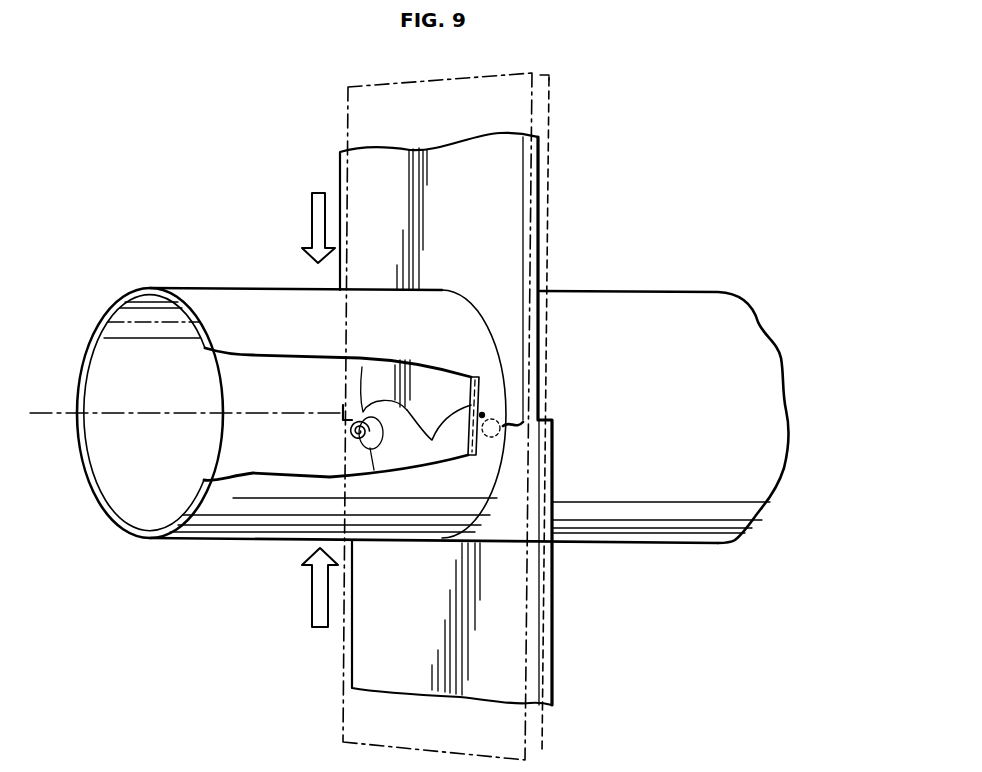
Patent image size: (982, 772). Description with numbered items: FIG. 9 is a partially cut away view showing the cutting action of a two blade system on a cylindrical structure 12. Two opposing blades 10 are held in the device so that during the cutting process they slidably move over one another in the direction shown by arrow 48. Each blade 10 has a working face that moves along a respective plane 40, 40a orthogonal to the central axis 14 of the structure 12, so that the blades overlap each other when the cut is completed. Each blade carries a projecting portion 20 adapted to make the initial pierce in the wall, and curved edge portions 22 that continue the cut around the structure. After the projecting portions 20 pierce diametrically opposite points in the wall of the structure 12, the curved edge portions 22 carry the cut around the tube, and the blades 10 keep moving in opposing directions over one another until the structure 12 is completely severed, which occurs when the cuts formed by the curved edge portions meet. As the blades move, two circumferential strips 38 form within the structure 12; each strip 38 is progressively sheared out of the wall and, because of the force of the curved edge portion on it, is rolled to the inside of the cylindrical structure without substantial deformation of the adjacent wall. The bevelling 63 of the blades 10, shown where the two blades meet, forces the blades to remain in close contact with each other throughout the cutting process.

The blade 10 is at (541, 227).
The cylindrical structure 12 is at (217, 518).
The central axis 14 is at (141, 420).
The projecting portion 20 is at (431, 438).
The curved edge portions 22 is at (392, 404).
The circumferential strip 38 is at (358, 447).
The plane 40 is at (347, 104).
The orthogonal plane 40a is at (549, 125).
The arrow 48 is at (312, 600).
The bevelling 63 is at (548, 415).